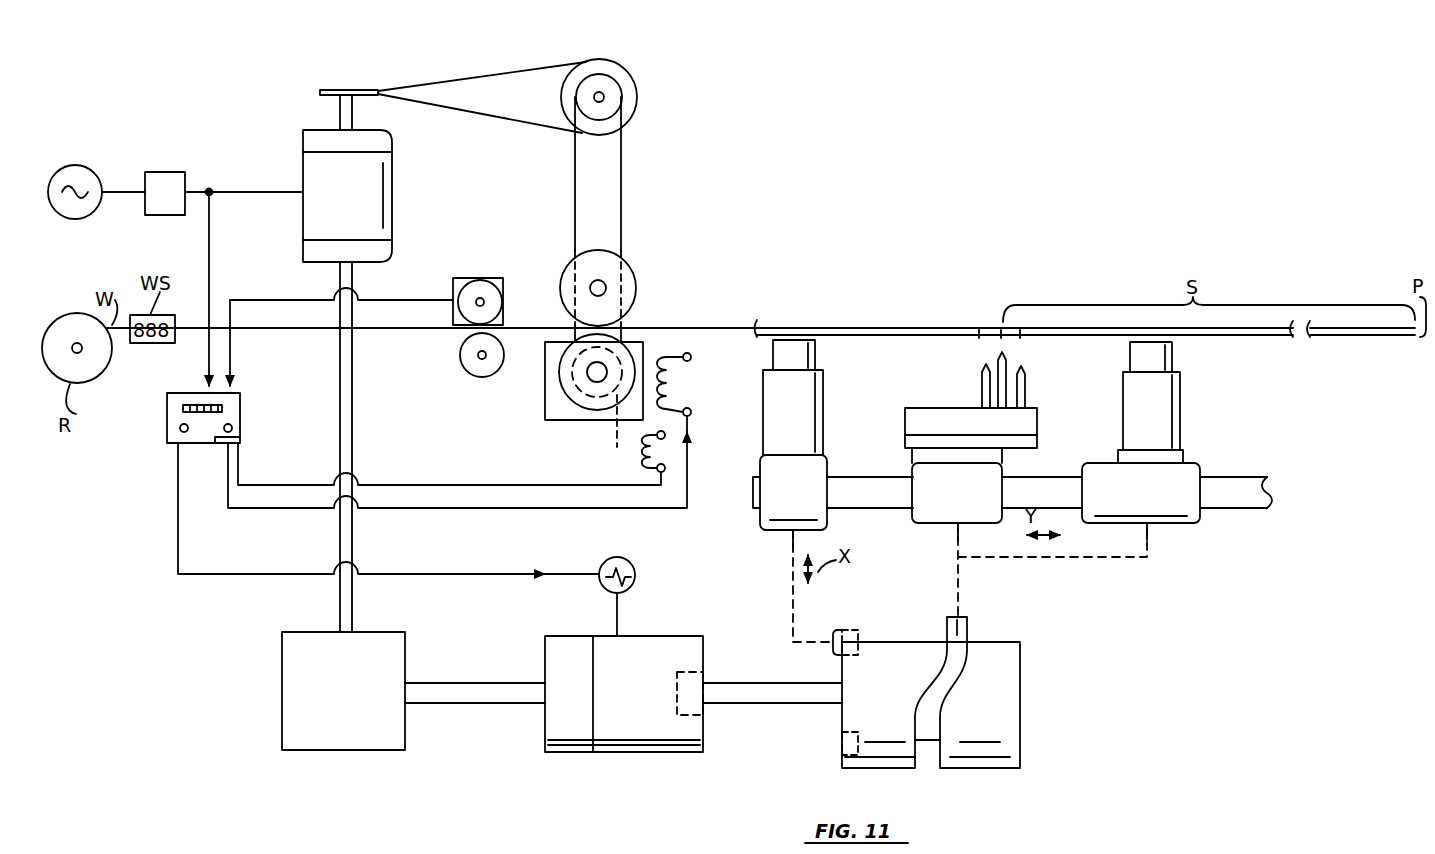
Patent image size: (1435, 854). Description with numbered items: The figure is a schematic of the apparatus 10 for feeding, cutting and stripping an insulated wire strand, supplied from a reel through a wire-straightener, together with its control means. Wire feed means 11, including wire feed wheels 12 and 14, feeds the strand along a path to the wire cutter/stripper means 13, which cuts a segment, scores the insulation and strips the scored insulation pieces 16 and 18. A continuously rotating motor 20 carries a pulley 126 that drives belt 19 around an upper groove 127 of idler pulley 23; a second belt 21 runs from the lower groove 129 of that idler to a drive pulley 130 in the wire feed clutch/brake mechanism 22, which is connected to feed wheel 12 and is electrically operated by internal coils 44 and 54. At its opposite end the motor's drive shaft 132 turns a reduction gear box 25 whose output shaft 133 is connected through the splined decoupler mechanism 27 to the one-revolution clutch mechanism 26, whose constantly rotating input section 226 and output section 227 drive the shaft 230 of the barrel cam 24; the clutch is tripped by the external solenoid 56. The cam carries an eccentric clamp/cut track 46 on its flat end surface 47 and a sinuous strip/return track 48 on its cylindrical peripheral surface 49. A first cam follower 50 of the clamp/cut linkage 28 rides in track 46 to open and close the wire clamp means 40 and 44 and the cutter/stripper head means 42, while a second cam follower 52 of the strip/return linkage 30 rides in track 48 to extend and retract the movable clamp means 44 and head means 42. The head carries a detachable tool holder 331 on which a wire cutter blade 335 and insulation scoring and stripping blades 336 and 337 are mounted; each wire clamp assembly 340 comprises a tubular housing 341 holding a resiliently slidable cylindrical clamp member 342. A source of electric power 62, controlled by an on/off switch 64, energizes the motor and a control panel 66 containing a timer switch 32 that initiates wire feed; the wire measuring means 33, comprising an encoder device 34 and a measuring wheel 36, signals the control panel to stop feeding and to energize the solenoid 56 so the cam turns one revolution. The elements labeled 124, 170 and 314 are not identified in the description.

The apparatus 10 is at (1296, 251).
The wire feed means 11 is at (645, 320).
The wire feed wheel 12 is at (577, 407).
The wire cutter/stripper means 13 is at (1175, 539).
The wire feed wheel 14 is at (638, 288).
The scored insulation piece 16 is at (979, 336).
The scored insulation piece 18 is at (1012, 338).
The drive belt 19 is at (472, 66).
The motor 20 is at (356, 208).
The belt 21 is at (622, 172).
The wire feed clutch/brake mechanism 22 is at (543, 409).
The idler pulley 23 is at (628, 82).
The barrel cam 24 is at (1005, 768).
The reduction gear box 25 is at (382, 751).
The one-revolution clutch mechanism 26 is at (645, 752).
The splined disengagement decoupler mechanism 27 is at (558, 752).
The first clamp/cut linkage 28 is at (790, 563).
The second strip/return linkage 30 is at (960, 578).
The timer switch 32 is at (240, 437).
The wire measuring means 33 is at (455, 343).
The encoder device 34 is at (468, 278).
The measuring wheel 36 is at (495, 298).
The wire clamp means 40 is at (812, 501).
The cutter/stripper head means 42 is at (977, 501).
The movable wire clamp means 44 is at (1162, 501).
The clamp/cut cam track 46 is at (864, 644).
The flat end surface 47 is at (842, 715).
The strip/return cam track 48 is at (960, 656).
The cylindrical peripheral surface 49 is at (1010, 688).
The first roller-type cam follower 50 is at (838, 630).
The second roller-type cam follower 52 is at (966, 620).
The internal coil 54 is at (683, 400).
The solenoid 56 is at (630, 560).
The source of electric power 62 is at (76, 165).
The on/off switch 64 is at (165, 172).
The control panel 66 is at (240, 412).
The motor shaft 124 is at (340, 107).
The pulley 126 is at (320, 90).
The upper groove 127 is at (605, 60).
The lower groove 129 is at (615, 98).
The drive pulley 130 is at (630, 451).
The drive shaft 132 is at (352, 608).
The output shaft 133 is at (459, 682).
The belt drive 170 is at (642, 262).
The input section 226 is at (672, 636).
The output section 227 is at (698, 664).
The drive shaft 230 is at (760, 705).
The rail 314 is at (1250, 478).
The tool holder 331 is at (1037, 443).
The wire cutter blade 335 is at (1008, 386).
The insulation scoring and stripping blade 336 is at (1025, 399).
The insulation scoring and stripping blade 337 is at (980, 385).
The wire clamp assembly 340 is at (830, 403).
The tubular housing 341 is at (823, 434).
The clamp member 342 is at (815, 361).